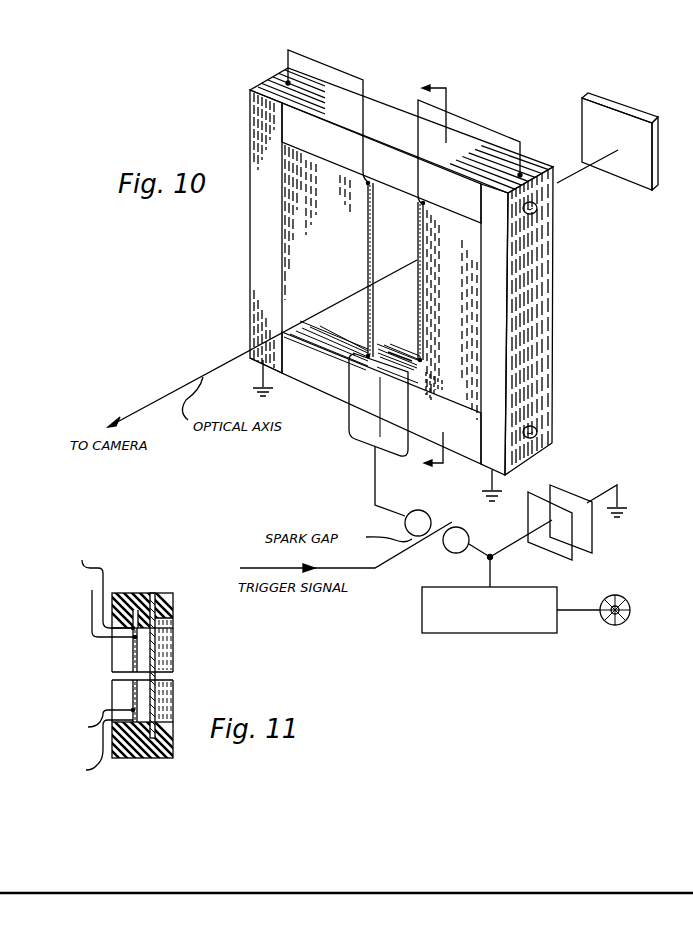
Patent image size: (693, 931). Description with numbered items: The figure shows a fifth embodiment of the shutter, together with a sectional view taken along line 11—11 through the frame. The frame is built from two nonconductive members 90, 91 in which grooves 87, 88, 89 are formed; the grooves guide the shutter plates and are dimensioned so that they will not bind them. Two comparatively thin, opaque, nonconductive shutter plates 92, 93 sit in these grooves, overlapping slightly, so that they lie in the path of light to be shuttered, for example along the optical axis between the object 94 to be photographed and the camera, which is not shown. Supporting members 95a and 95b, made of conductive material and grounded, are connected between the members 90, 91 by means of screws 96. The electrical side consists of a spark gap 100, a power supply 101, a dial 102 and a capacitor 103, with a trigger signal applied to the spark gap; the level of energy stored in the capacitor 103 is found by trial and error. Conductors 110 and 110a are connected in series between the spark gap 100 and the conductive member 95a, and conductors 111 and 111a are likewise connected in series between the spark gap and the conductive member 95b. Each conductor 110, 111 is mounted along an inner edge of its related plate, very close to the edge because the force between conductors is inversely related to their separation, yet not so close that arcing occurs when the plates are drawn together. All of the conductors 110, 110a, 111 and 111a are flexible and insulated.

In FIG. 10, the groove 87 is at (393, 355).
In FIG. 10, the groove 88 is at (398, 352).
In FIG. 11, the groove 89 is at (153, 592).
In FIG. 10, the member 90 is at (324, 386).
In FIG. 11, the member 90 is at (173, 754).
In FIG. 10, the member 91 is at (382, 110).
In FIG. 11, the member 91 is at (175, 607).
In FIG. 10, the shutter plate 92 is at (312, 222).
In FIG. 11, the shutter plate 92 is at (130, 658).
In FIG. 10, the shutter plate 93 is at (470, 276).
In FIG. 11, the shutter plate 93 is at (174, 656).
In FIG. 10, the object 94 is at (633, 187).
In FIG. 10, the supporting member 95a is at (270, 281).
In FIG. 10, the supporting member 95b is at (555, 350).
In FIG. 10, the screw 96 is at (537, 208).
In FIG. 10, the spark gap 100 is at (441, 565).
In FIG. 10, the power supply 101 is at (508, 635).
In FIG. 10, the dial 102 is at (630, 611).
In FIG. 10, the capacitor 103 is at (620, 570).
In FIG. 10, the conductor 110 is at (364, 450).
In FIG. 11, the conductor 110 is at (95, 721).
In FIG. 10, the conductor 110a is at (367, 45).
In FIG. 11, the conductor 110a is at (100, 587).
In FIG. 10, the conductor 111 is at (394, 457).
In FIG. 11, the conductor 111 is at (91, 749).
In FIG. 10, the conductor 111a is at (513, 110).
In FIG. 11, the conductor 111a is at (90, 605).
In FIG. 10, the section line 11 is at (437, 83).